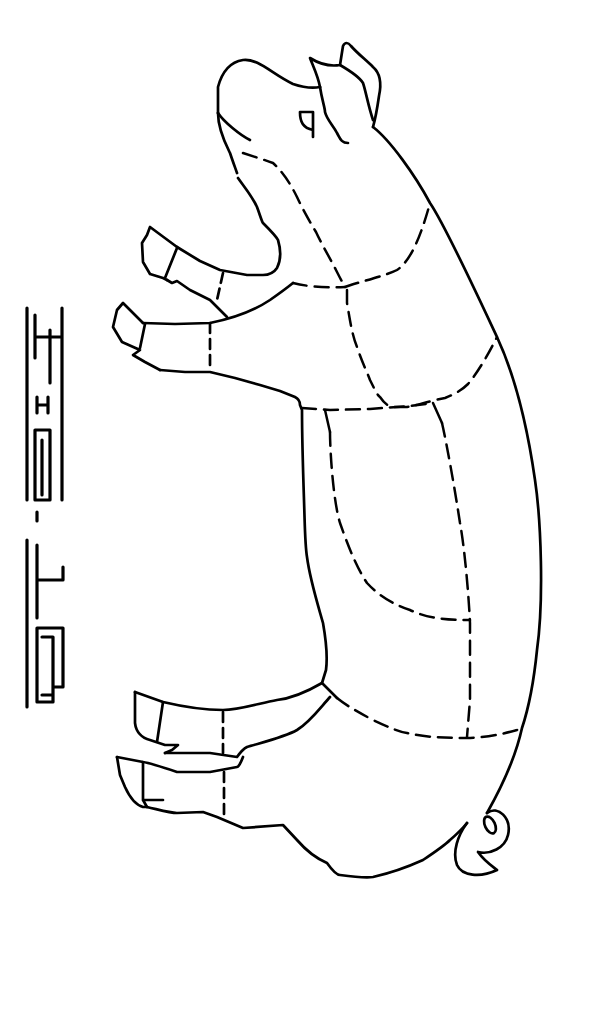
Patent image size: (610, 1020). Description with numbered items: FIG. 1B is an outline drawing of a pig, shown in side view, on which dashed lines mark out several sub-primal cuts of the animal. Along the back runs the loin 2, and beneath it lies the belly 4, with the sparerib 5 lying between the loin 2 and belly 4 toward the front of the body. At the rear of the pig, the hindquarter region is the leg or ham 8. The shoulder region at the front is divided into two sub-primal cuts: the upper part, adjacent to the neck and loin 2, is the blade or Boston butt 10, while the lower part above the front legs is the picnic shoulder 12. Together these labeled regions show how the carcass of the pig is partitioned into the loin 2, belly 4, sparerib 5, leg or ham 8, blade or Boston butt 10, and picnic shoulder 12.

The loin 2 is at (478, 570).
The belly 4 is at (392, 663).
The sparerib 5 is at (397, 515).
The leg or ham 8 is at (429, 752).
The blade or Boston butt 10 is at (421, 305).
The picnic shoulder 12 is at (359, 346).